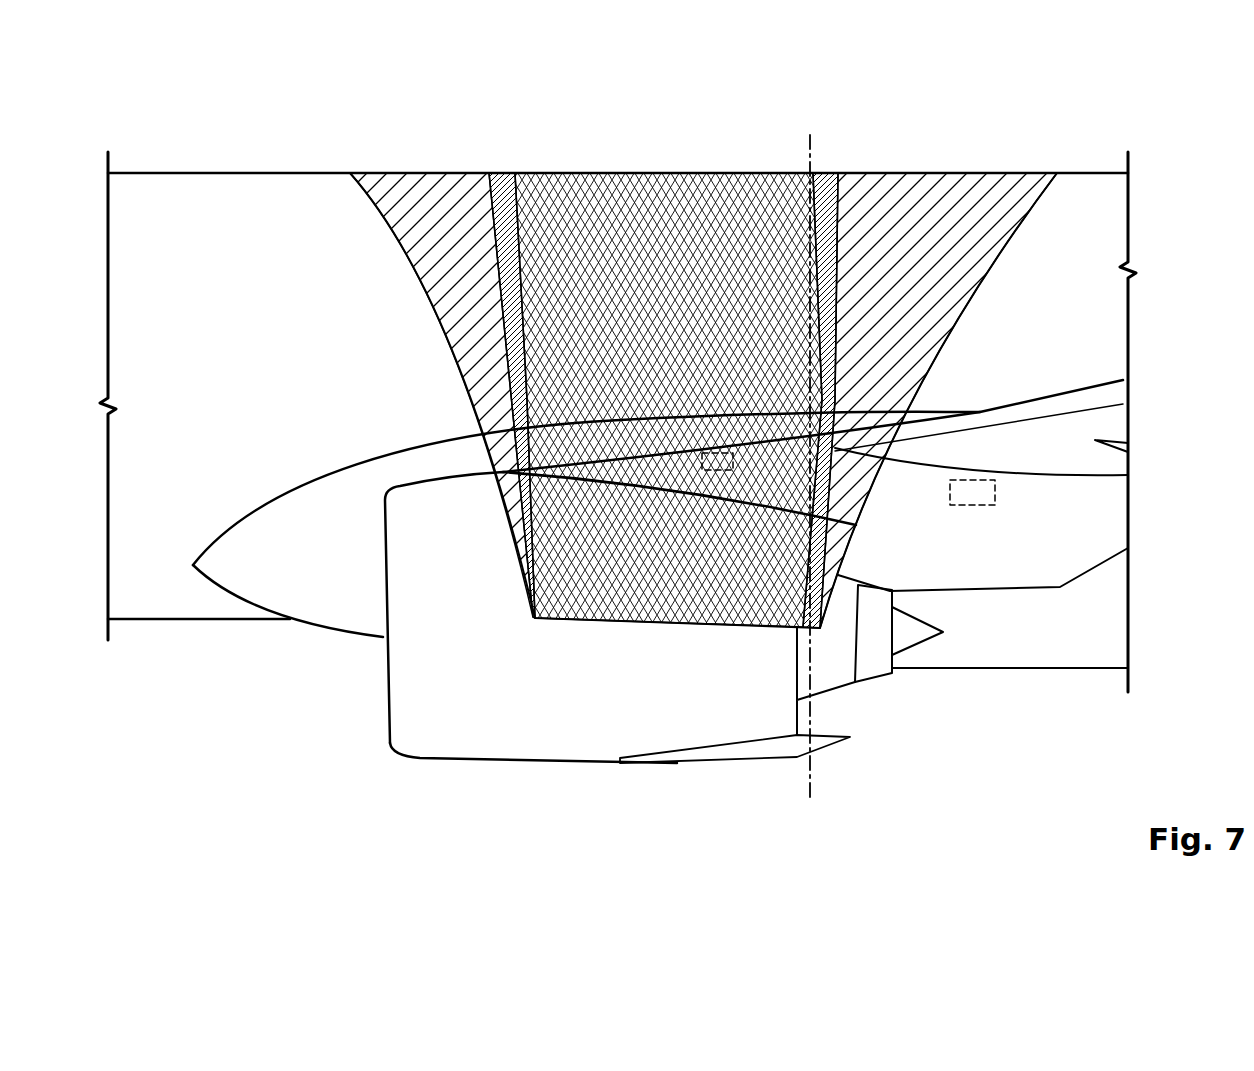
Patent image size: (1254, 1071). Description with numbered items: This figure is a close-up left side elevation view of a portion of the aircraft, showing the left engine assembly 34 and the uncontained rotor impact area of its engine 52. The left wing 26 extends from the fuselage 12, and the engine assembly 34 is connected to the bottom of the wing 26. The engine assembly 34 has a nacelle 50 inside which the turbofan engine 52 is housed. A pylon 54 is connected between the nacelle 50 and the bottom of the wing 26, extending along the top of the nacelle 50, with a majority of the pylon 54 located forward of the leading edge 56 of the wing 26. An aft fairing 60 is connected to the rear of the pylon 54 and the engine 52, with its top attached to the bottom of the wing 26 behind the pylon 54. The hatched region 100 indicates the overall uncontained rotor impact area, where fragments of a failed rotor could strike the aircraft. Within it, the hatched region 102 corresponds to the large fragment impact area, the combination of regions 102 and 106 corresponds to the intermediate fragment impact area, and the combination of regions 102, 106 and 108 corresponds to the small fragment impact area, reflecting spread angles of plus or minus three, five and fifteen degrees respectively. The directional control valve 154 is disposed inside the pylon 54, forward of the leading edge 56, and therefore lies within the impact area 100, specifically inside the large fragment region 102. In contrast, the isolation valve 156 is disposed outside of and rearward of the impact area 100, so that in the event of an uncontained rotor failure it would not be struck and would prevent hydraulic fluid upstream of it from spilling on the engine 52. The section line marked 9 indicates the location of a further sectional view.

The fuselage 12 is at (244, 187).
The uncontained rotor impact area 100 is at (577, 135).
The hatched region (small fragment impact area) 108 is at (376, 188).
The hatched region (intermediate fragment impact area) 106 is at (500, 188).
The hatched region (large fragment impact area) 102 is at (713, 188).
The leading edge 56 is at (982, 420).
The wing 26 is at (1036, 442).
The nacelle 50 is at (497, 724).
The pylon 54 is at (616, 470).
The directional control valve 154 is at (720, 462).
The engine 52 is at (827, 682).
The engine assembly 34 is at (917, 690).
The aft fairing 60 is at (1040, 570).
The isolation valve 156 is at (985, 494).
The section line 9- 9 is at (810, 135).